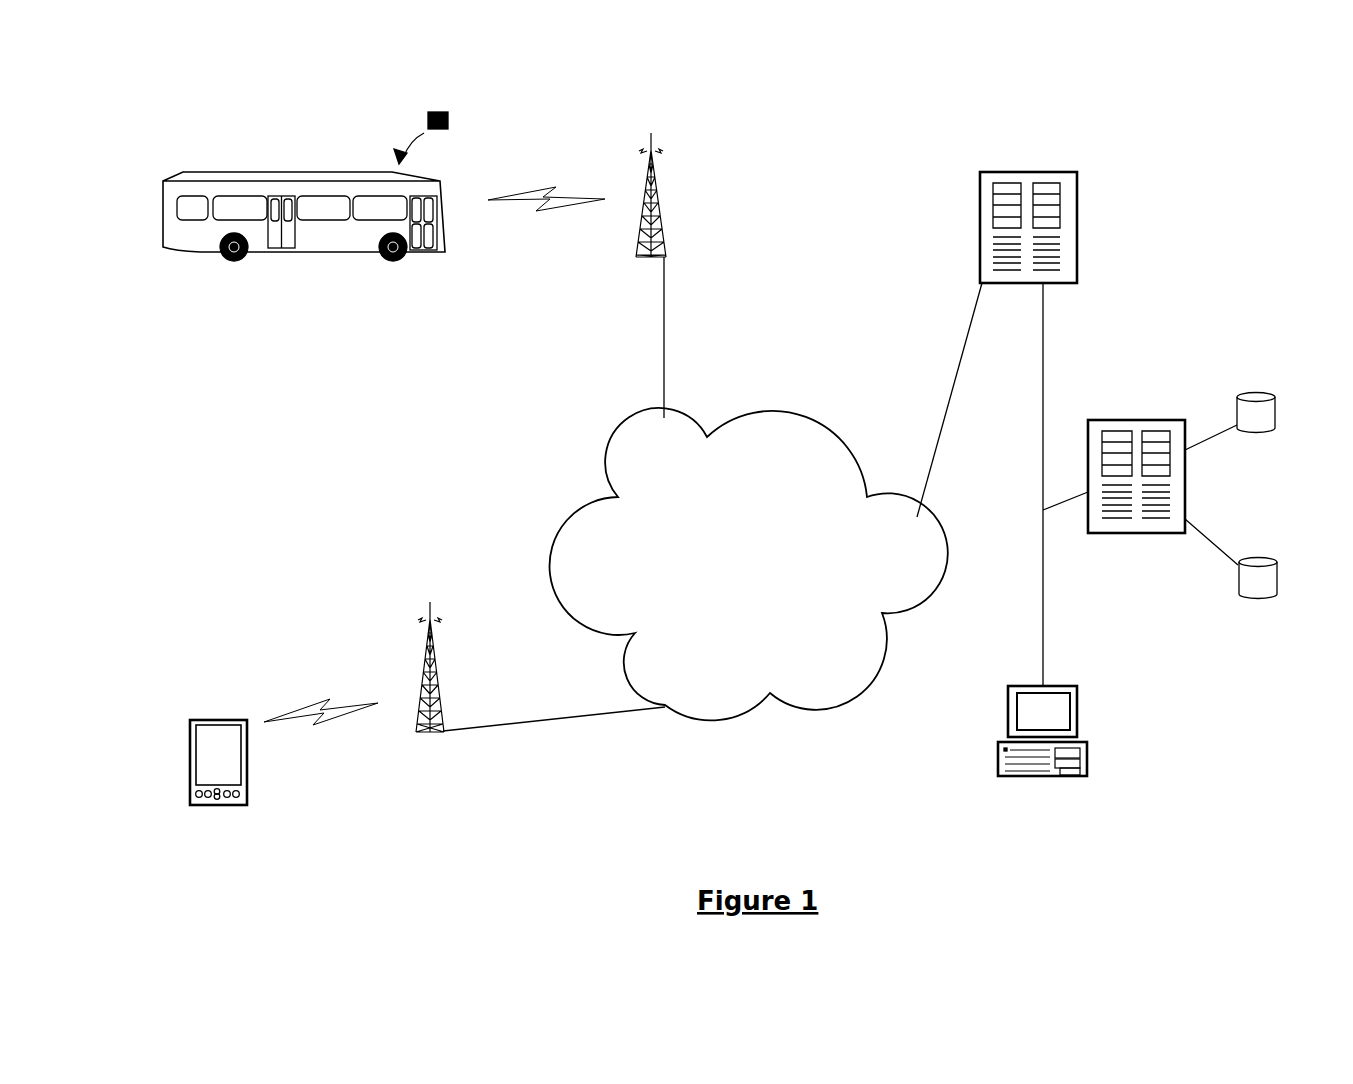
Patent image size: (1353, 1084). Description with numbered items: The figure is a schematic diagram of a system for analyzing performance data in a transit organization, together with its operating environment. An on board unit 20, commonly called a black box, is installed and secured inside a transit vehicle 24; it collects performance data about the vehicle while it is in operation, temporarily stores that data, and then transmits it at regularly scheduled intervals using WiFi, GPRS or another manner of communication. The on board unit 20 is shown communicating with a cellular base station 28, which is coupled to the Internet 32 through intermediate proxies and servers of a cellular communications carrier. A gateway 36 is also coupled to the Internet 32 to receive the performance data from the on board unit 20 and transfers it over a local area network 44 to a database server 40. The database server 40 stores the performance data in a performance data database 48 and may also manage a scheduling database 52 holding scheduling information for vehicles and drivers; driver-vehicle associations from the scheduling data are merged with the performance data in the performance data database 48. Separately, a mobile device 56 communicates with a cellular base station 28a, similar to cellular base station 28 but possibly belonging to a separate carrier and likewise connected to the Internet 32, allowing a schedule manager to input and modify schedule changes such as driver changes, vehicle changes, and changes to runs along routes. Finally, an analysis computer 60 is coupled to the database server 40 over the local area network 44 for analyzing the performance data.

The on board unit 20 is at (446, 112).
The transit vehicle 24 is at (220, 172).
The cellular base station 28 is at (658, 178).
The cellular base station 28a is at (425, 650).
The Internet 32 is at (749, 564).
The gateway 36 is at (1033, 172).
The database server 40 is at (1137, 420).
The local area network 44 is at (1042, 462).
The performance data database 48 is at (1268, 394).
The scheduling database 52 is at (1270, 561).
The mobile device 56 is at (190, 745).
The analysis computer 60 is at (1077, 727).